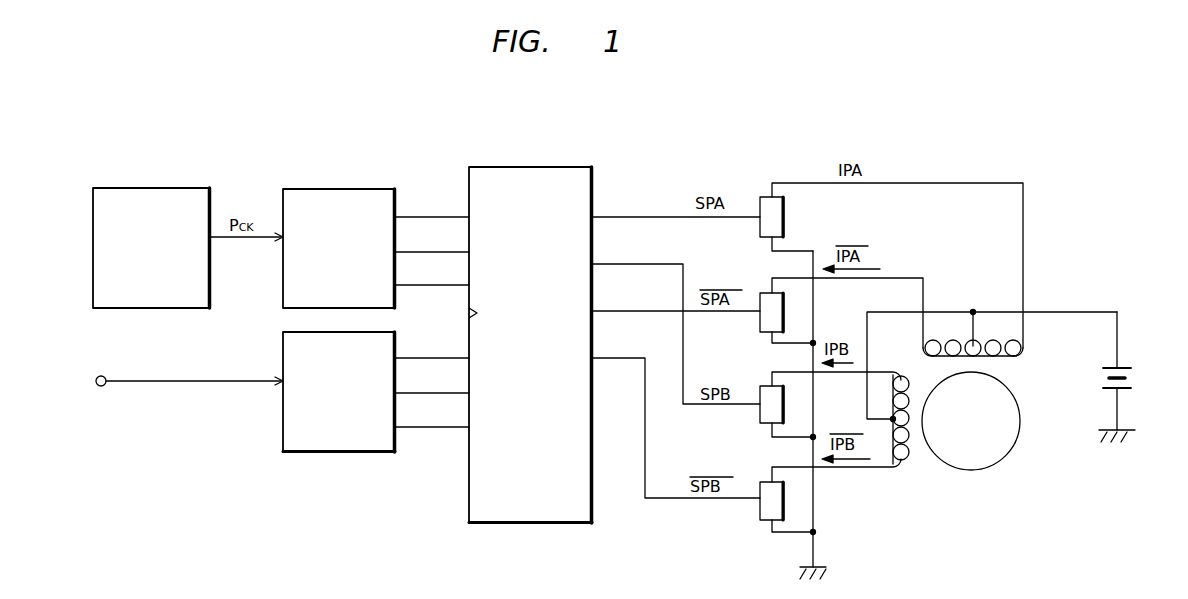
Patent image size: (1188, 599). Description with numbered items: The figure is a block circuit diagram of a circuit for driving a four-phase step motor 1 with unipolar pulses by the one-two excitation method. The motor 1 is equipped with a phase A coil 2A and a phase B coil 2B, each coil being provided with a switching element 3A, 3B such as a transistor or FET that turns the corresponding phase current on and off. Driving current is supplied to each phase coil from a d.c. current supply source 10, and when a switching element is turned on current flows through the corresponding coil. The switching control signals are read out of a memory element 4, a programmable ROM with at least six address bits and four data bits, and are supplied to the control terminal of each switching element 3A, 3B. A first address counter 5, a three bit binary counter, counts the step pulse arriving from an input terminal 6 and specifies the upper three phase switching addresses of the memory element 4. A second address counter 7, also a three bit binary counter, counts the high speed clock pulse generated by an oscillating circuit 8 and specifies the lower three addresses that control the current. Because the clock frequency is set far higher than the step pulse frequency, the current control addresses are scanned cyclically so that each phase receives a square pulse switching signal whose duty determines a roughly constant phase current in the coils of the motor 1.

The step motor 1 is at (1000, 476).
The phase A coil 2A is at (945, 340).
The phase B coil 2B is at (893, 398).
The switching element 3A is at (760, 204).
The switching element 3B is at (760, 415).
The memory element 4 is at (533, 167).
The first address counter 5 is at (322, 452).
The input terminal 6 is at (104, 386).
The second address counter 7 is at (336, 189).
The oscillating circuit 8 is at (153, 188).
The d.c. current supply source 10 is at (1131, 384).